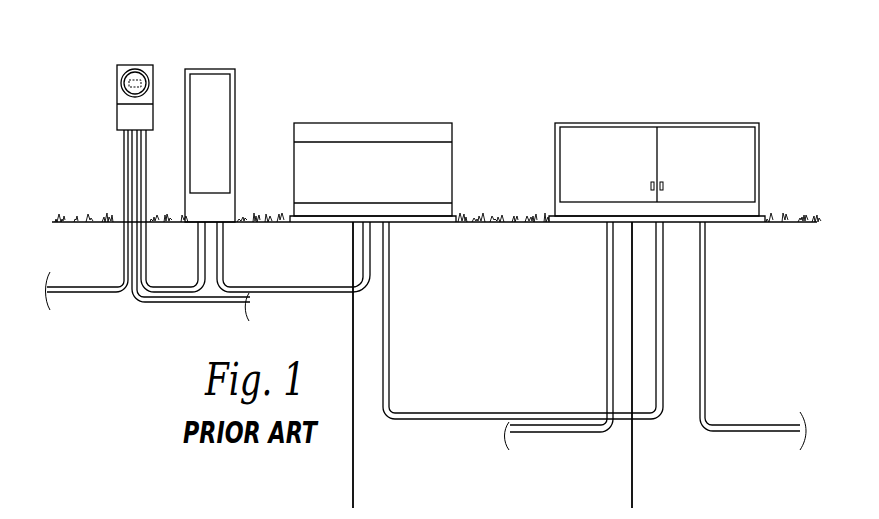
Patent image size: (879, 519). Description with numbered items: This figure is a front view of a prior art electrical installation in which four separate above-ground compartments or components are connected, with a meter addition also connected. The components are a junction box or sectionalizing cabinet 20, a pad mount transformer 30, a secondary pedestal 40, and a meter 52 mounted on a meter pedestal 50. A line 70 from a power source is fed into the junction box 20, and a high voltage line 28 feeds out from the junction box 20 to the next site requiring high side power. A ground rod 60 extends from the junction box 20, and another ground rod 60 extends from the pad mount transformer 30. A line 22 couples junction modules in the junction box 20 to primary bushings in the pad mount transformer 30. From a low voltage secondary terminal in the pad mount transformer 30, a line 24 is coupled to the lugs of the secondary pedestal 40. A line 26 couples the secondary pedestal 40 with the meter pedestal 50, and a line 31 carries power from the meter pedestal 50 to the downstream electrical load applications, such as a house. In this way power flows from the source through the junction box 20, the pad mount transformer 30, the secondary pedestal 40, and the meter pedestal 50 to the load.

The junction box 20 is at (670, 122).
The line 22 is at (447, 421).
The line 24 is at (297, 293).
The line 26 is at (160, 288).
The line 28 is at (190, 304).
The pad mount transformer 30 is at (373, 122).
The line 31 is at (73, 293).
The secondary pedestal 40 is at (213, 68).
The meter pedestal 50 is at (142, 64).
The meter 52 is at (117, 70).
The ground rod 60 is at (356, 488).
The line 70 is at (760, 432).